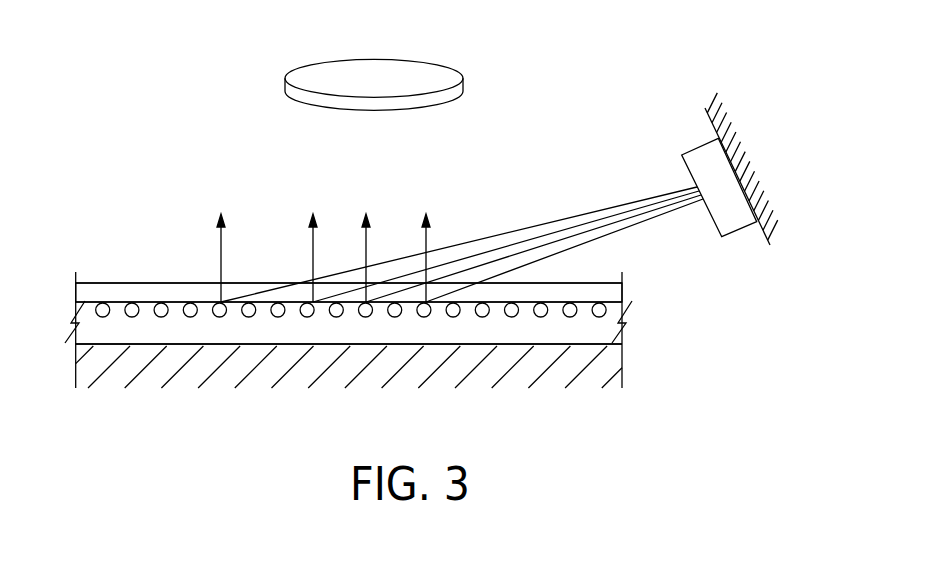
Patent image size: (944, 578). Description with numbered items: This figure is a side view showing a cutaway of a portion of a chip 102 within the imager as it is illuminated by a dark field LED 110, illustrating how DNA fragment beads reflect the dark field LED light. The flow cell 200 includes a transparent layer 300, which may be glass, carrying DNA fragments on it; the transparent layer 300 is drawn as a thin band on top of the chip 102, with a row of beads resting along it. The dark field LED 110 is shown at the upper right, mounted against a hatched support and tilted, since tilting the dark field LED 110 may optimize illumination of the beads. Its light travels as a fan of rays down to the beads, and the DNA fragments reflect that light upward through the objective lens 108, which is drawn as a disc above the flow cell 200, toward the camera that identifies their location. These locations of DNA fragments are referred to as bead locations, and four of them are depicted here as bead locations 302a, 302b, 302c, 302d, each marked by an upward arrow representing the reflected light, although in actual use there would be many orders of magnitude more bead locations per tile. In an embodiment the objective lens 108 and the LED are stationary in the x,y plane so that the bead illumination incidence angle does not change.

The flow cell 200 is at (134, 95).
The objective lens 108 is at (447, 76).
The dark field LED 110 is at (742, 213).
The transparent layer 300 is at (102, 289).
The chip 102 is at (153, 374).
The bead location 302a is at (222, 318).
The bead location 302b is at (308, 318).
The bead location 302c is at (373, 318).
The bead location 302d is at (423, 318).